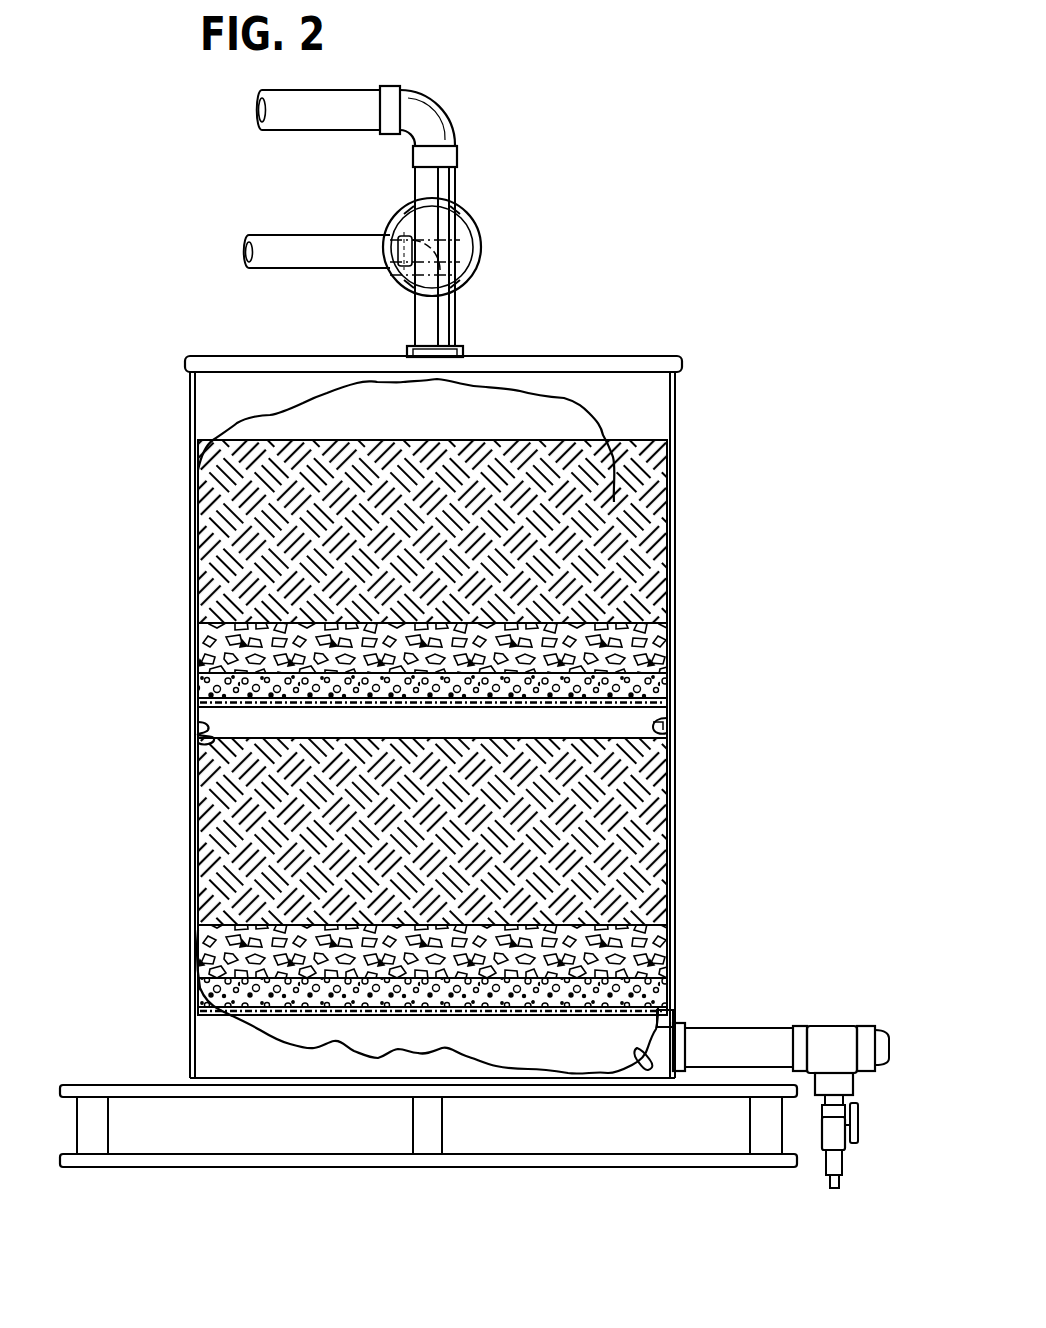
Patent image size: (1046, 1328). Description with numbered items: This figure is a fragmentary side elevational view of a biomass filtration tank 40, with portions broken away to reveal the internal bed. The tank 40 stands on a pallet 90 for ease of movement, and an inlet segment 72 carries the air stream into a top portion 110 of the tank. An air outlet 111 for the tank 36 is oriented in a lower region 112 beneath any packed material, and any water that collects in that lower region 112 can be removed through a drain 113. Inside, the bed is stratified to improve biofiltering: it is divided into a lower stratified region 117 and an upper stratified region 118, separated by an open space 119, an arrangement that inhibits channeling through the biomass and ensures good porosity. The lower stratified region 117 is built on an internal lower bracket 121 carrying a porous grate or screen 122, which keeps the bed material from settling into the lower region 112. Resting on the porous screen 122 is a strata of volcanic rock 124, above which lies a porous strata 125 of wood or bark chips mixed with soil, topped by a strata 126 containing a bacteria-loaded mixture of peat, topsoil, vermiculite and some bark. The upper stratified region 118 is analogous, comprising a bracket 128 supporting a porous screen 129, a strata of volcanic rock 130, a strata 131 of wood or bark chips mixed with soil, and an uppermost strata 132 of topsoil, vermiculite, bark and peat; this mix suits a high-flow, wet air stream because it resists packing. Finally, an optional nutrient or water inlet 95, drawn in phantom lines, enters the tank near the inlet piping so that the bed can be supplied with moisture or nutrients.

The tank 36 is at (697, 360).
The tank 40 is at (454, 598).
The inlet segment 72 is at (423, 108).
The pallet 90 is at (93, 1083).
The nutrient or water inlet 95 is at (314, 235).
The top portion 110 is at (465, 348).
The air outlet 111 is at (688, 1027).
The lower region 112 is at (649, 1060).
The drain 113 is at (861, 1131).
The lower stratified region 117 is at (454, 900).
The upper stratified region 118 is at (707, 490).
The open space 119 is at (200, 740).
The internal lower bracket 121 is at (657, 1013).
The porous grate or screen 122 is at (460, 1015).
The strata of volcanic rock 124 is at (205, 994).
The porous strata of wood or bark chips mixed with soil 125 is at (205, 955).
The strata of peat, topsoil, vermiculite and bark 126 is at (205, 872).
The bracket 128 is at (665, 730).
The porous screen 129 is at (495, 706).
The strata of volcanic rock 130 is at (670, 688).
The strata of wood or bark chips mixed with soil 131 is at (200, 648).
The strata of topsoil, vermiculite, bark and peat 132 is at (200, 510).